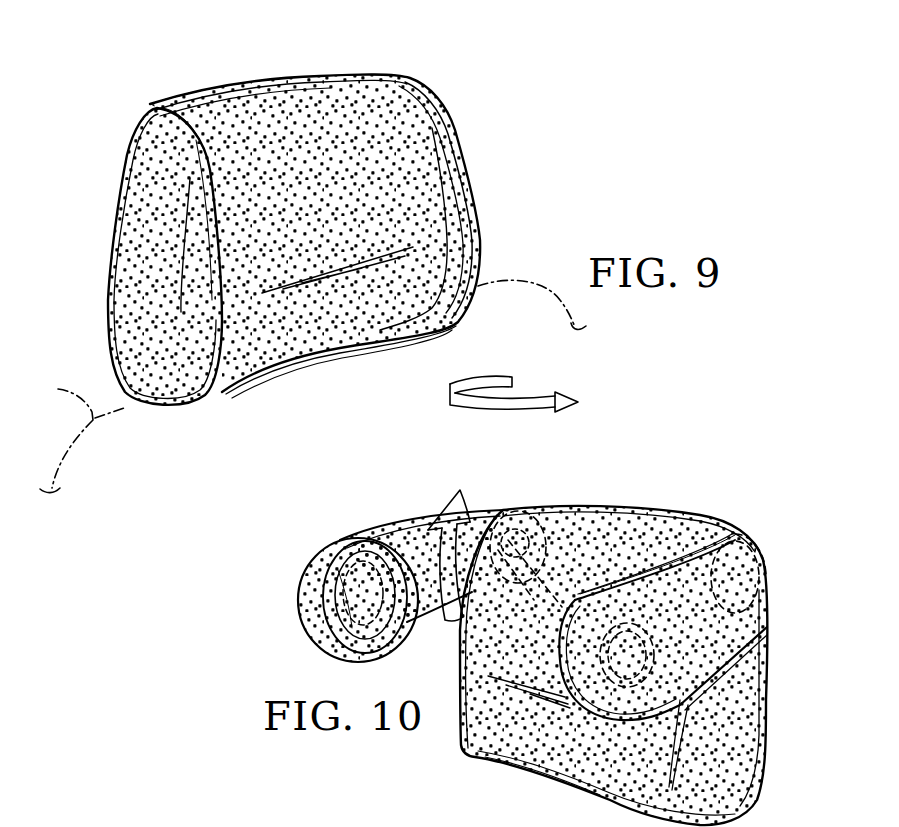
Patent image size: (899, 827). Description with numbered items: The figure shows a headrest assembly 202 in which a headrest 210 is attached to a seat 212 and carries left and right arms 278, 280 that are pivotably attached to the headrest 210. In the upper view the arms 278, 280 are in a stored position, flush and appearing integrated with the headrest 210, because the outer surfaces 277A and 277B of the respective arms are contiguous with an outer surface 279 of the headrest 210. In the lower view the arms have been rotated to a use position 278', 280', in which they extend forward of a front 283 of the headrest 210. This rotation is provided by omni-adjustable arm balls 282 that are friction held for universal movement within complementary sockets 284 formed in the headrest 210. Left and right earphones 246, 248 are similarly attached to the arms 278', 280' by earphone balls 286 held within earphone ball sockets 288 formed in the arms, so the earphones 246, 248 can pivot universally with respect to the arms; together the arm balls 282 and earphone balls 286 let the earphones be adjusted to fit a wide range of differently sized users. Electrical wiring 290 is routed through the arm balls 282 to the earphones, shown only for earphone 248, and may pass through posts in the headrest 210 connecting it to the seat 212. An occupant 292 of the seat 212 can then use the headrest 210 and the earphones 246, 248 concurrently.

In FIG. 9, the headrest assembly 202 is at (447, 74).
In FIG. 10, the headrest assembly 202 is at (789, 507).
In FIG. 9, the headrest 210 is at (323, 77).
In FIG. 9, the seat 212 is at (303, 386).
In FIG. 10, the left earphone 246 is at (580, 600).
In FIG. 10, the right earphone 248 is at (322, 578).
In FIG. 9, the outer surface of arm 277A is at (163, 137).
In FIG. 9, the outer surface of arm 277B is at (447, 183).
In FIG. 9, the left arm 278 is at (468, 200).
In FIG. 10, the left arm in use position 278' is at (651, 665).
In FIG. 9, the outer surface of headrest 279 is at (370, 100).
In FIG. 9, the right arm 280 is at (139, 256).
In FIG. 10, the right arm in use position 280' is at (421, 530).
In FIG. 10, the arm ball 282 is at (753, 535).
In FIG. 10, the front of headrest 283 is at (645, 528).
In FIG. 10, the socket 284 is at (713, 520).
In FIG. 10, the earphone ball 286 is at (384, 530).
In FIG. 10, the earphone ball socket 288 is at (362, 548).
In FIG. 10, the electrical wiring 290 is at (507, 613).
In FIG. 10, the occupant 292 is at (239, 820).